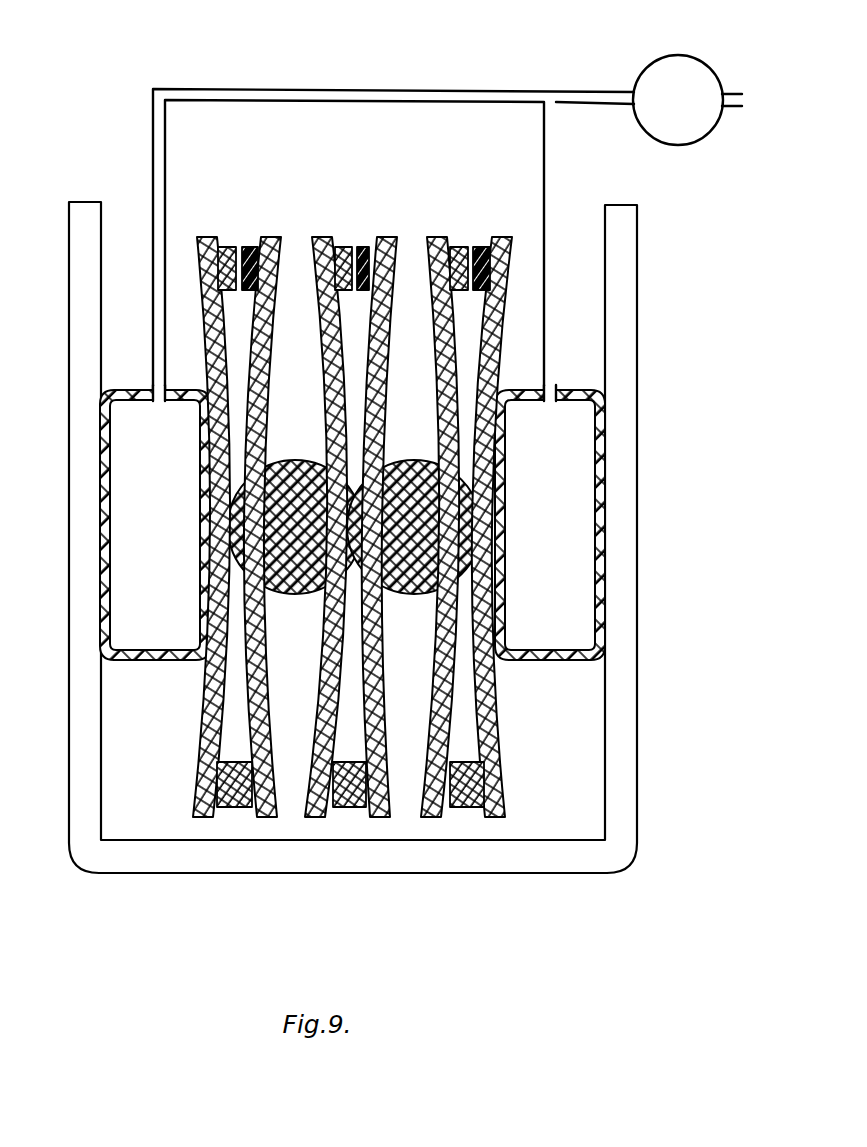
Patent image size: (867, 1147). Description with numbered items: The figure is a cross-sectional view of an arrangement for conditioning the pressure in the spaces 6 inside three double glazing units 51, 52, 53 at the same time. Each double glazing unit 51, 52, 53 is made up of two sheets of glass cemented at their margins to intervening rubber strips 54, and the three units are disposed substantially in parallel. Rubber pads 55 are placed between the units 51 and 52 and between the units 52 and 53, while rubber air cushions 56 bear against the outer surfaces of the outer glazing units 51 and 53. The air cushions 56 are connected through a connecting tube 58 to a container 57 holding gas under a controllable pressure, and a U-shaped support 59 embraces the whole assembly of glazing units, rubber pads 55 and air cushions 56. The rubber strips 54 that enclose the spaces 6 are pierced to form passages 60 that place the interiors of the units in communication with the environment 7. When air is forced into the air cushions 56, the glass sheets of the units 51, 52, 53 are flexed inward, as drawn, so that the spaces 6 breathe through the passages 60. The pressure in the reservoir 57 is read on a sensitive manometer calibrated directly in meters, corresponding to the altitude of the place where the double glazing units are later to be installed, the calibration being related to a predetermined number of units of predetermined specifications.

The space 6 is at (352, 327).
The environment 7 is at (663, 292).
The double glazing unit 51 is at (264, 233).
The double glazing unit 52 is at (382, 233).
The double glazing unit 53 is at (502, 233).
The rubber strip 54 is at (228, 790).
The rubber pad 55 is at (287, 487).
The rubber air cushion 56 is at (152, 662).
The container 57 is at (687, 125).
The connecting tube 58 is at (313, 88).
The U-shaped support 59 is at (639, 737).
The passage 60 is at (238, 245).